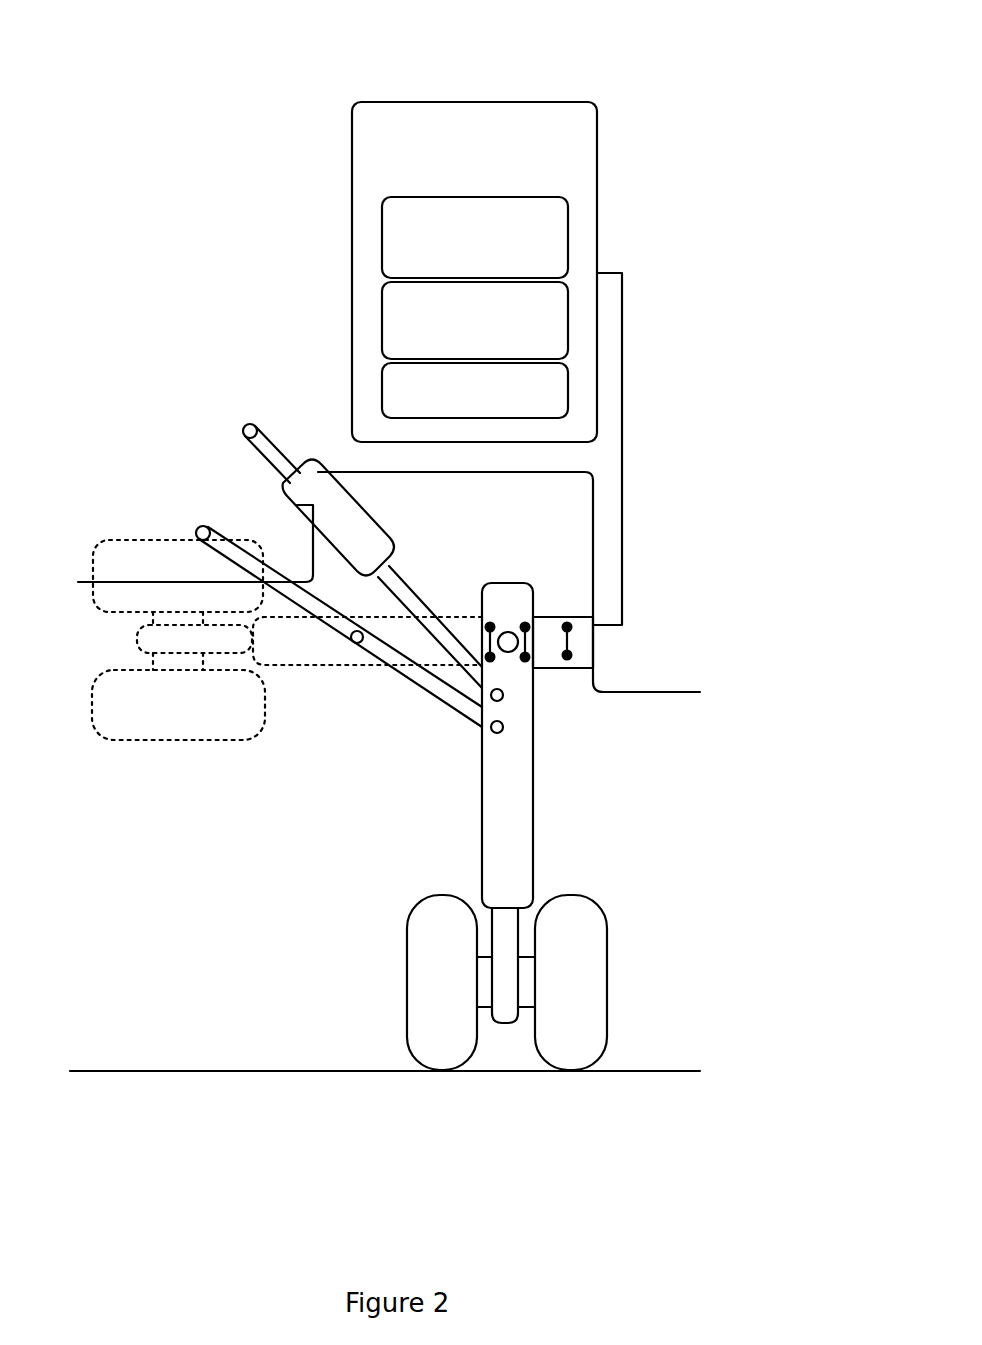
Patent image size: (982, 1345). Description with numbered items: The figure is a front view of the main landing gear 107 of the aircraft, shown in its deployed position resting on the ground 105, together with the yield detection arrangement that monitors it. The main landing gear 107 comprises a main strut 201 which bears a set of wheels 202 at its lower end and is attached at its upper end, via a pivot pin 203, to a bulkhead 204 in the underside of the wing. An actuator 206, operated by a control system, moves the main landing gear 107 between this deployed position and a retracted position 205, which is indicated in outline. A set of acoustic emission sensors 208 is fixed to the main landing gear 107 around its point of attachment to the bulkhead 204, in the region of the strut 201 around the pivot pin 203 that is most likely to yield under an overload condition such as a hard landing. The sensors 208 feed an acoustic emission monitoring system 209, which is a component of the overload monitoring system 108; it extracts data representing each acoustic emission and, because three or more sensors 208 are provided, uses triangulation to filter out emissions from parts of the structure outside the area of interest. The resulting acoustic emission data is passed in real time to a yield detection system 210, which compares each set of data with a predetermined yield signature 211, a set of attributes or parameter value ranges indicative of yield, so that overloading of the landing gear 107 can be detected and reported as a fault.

The overload monitoring system 108 is at (477, 102).
The acoustic emission monitoring system 209 is at (382, 238).
The yield detection system 210 is at (382, 318).
The yield signature 211 is at (568, 388).
The bulkhead 204 is at (348, 472).
The retracted position 205 is at (297, 505).
The actuator 206 is at (197, 536).
The acoustic emission sensors 208 is at (567, 655).
The pivot pin 203 is at (510, 652).
The main strut 201 is at (513, 745).
The main landing gear 107 is at (533, 865).
The wheels 202 is at (585, 978).
The ground 105 is at (270, 1070).